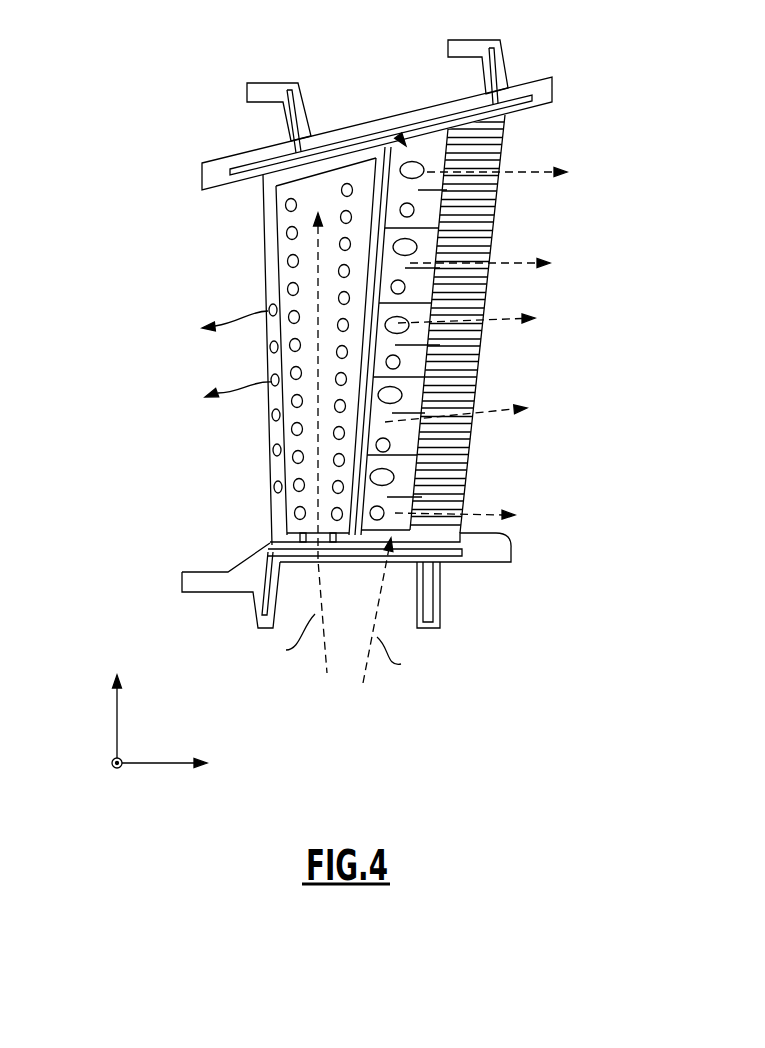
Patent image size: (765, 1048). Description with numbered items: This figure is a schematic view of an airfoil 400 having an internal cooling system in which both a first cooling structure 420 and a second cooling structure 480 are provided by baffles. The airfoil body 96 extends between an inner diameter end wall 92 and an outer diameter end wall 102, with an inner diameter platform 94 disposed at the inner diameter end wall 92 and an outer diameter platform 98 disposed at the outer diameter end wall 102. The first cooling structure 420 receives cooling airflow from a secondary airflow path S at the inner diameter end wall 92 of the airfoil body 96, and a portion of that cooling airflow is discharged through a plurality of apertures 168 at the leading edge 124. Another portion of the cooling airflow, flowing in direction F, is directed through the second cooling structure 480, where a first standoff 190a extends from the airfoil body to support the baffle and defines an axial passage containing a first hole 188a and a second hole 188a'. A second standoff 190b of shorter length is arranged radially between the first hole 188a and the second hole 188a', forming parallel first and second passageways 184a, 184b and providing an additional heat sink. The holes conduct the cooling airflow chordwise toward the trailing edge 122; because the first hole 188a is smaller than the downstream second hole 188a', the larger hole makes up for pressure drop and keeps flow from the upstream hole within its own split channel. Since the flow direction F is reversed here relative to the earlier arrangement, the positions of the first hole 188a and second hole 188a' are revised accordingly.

The airfoil 400 is at (124, 104).
The outer diameter platform 98 is at (218, 173).
The outer diameter end wall 102 is at (268, 178).
The second cooling structure 480 is at (398, 136).
The first cooling structure 420 is at (262, 232).
The apertures 168 is at (270, 452).
The inner diameter end wall 92 is at (285, 537).
The airfoil body 96 is at (155, 503).
The second passageway 184b is at (437, 148).
The first passageway 184a is at (427, 221).
The second hole 188a' is at (512, 304).
The first hole 188a is at (507, 352).
The second standoff 190b is at (447, 188).
The first standoff 190a is at (470, 243).
The trailing edge 122 is at (508, 535).
The leading edge 124 is at (270, 531).
The inner diameter platform 94 is at (487, 550).